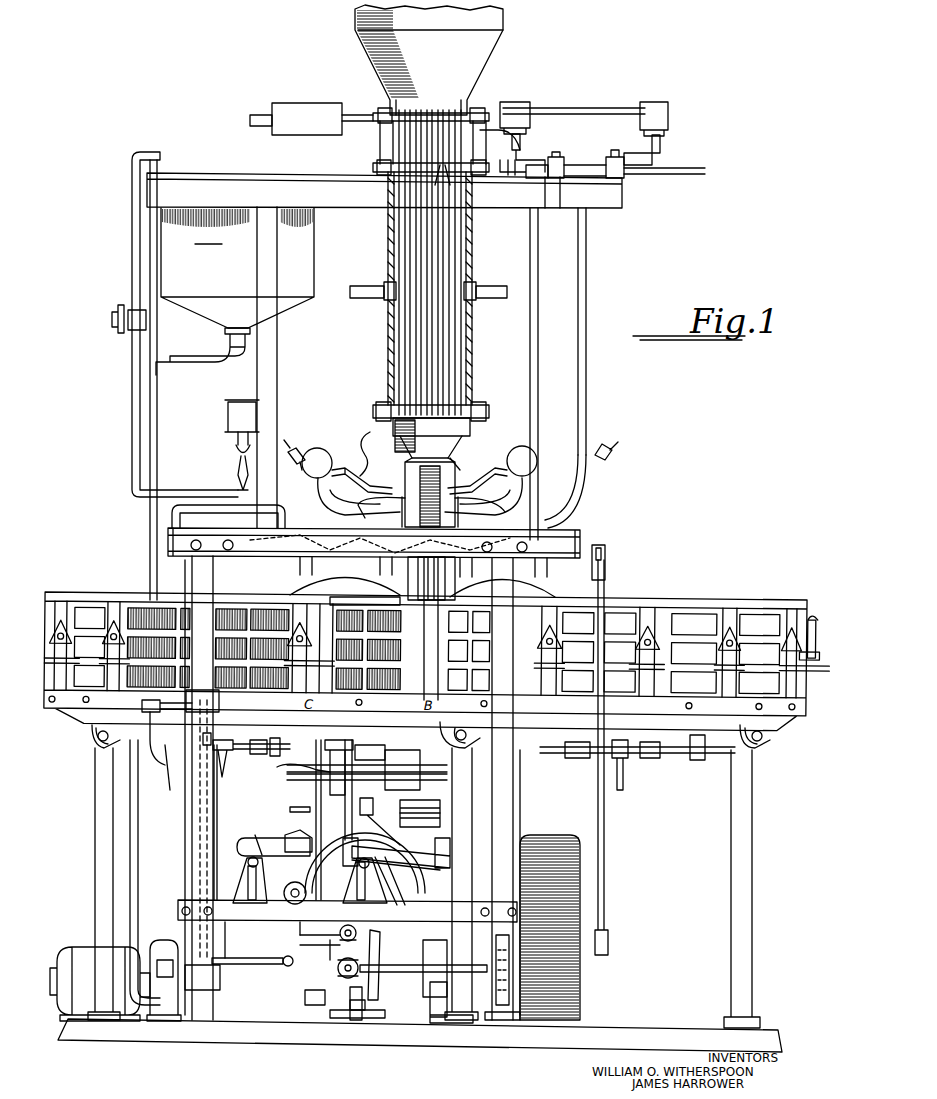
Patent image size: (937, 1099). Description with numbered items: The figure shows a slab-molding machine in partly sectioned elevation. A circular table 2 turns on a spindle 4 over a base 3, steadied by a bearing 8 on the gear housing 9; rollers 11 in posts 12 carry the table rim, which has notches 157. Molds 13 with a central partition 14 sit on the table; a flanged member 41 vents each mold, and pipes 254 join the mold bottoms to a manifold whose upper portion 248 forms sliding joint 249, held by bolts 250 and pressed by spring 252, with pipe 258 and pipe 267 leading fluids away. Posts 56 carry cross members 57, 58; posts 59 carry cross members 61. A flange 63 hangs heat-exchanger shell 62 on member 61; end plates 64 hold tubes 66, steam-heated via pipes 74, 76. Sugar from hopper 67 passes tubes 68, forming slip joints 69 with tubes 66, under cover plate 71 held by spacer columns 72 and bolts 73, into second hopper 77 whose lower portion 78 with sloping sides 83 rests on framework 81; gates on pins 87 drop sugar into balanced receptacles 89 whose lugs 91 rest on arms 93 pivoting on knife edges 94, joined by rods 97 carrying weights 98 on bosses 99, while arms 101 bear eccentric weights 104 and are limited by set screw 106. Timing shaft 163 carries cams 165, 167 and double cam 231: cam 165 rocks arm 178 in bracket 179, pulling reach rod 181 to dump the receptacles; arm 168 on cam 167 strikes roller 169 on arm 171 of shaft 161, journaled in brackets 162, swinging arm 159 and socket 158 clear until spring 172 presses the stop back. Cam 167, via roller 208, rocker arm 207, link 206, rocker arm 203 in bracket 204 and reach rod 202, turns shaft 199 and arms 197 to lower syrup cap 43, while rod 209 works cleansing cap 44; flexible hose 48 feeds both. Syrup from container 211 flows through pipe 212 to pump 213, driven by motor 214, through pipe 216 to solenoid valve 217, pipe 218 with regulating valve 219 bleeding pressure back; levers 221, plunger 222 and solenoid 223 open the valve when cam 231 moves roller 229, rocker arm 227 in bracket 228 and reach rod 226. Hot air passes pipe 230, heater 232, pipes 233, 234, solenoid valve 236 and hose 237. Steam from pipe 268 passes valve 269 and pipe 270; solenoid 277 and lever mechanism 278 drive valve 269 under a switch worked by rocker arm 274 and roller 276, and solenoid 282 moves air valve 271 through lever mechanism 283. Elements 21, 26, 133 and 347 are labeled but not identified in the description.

The circular table 2 is at (795, 725).
The base 3 is at (250, 1040).
The spindle 4 is at (395, 750).
The bearing 8 is at (400, 812).
The gear housing 9 is at (255, 835).
The rollers 11 is at (92, 732).
The posts 12 is at (95, 808).
The molds 13 is at (96, 595).
The central partition 14 is at (295, 680).
The hanger bracket 21 is at (638, 610).
The latch 26 is at (818, 638).
The flanged member 41 is at (238, 748).
The syrup cap 43 is at (297, 582).
The cleansing cap 44 is at (545, 580).
The flexible feeding hose 48 is at (580, 487).
The posts 56 is at (218, 803).
The cross member 57 is at (245, 921).
The cross member 58 is at (578, 528).
The posts 59 is at (277, 357).
The cross member 61 is at (623, 191).
The exterior shell 62 is at (473, 240).
The flange 63 is at (388, 176).
The end plates 64 is at (480, 176).
The tubes 66 is at (410, 240).
The supply hopper 67 is at (498, 32).
The second set of tubes 68 is at (402, 146).
The slip joints 69 is at (452, 182).
The cover plate 71 is at (375, 113).
The spacer columns 72 is at (380, 130).
The through bolts 73 is at (385, 108).
The steam pipe 74 is at (352, 300).
The steam pipe 76 is at (486, 300).
The second hopper 77 is at (472, 432).
The lower portion of lower hopper 78 is at (405, 450).
The framework 81 is at (458, 515).
The inwardly sloping sides 83 is at (452, 440).
The pins 87 is at (405, 466).
The balanced receptacles 89 is at (405, 515).
The lugs 91 is at (445, 475).
The pairs of arms 93 is at (372, 460).
The knife edges 94 is at (348, 496).
The rods 97 is at (485, 480).
The balancing weights 98 is at (318, 450).
The bosses 99 is at (520, 500).
The arms 101 is at (535, 472).
The eccentrically mounted weights 104 is at (290, 466).
The set screw 106 is at (370, 436).
The discharge pipe 133 is at (430, 560).
The notches 157 is at (363, 699).
The socket 158 is at (150, 712).
The arm 159 is at (165, 745).
The shaft 161 is at (218, 783).
The brackets 162 is at (214, 700).
The timing gear shaft 163 is at (300, 925).
The cam 165 is at (365, 903).
The cam 167 is at (316, 800).
The projecting arm 168 is at (293, 962).
The roller 169 is at (293, 968).
The arm 171 is at (226, 940).
The spring 172 is at (180, 745).
The rocker arm 178 is at (440, 870).
The bracket 179 is at (393, 905).
The reach rod 181 is at (442, 789).
The arms 197 is at (303, 545).
The shaft 199 is at (340, 596).
The reach rod 202 is at (277, 767).
The rocker arm 203 is at (340, 1000).
The bracket 204 is at (365, 1018).
The link 206 is at (375, 1000).
The rocker arm 207 is at (595, 942).
The roller 208 is at (352, 948).
The rod 209 is at (601, 810).
The container 211 is at (235, 291).
The pipe 212 is at (150, 513).
The pressure pump 213 is at (155, 942).
The motor 214 is at (80, 947).
The second pipe 216 is at (150, 851).
The solenoid controlled valve 217 is at (290, 536).
The third pipe 218 is at (132, 433).
The pressure regulating valve 219 is at (122, 330).
The system of levers 221 is at (238, 470).
The plunger 222 is at (236, 447).
The solenoid 223 is at (230, 420).
The reach rod 226 is at (347, 755).
The rocker arm 227 is at (278, 858).
The bracket 228 is at (238, 870).
The roller 229 is at (290, 885).
The air pipe 230 is at (253, 115).
The double cam 231 is at (292, 835).
The heater 232 is at (318, 103).
The pipe 233 is at (522, 140).
The pipe 234 is at (530, 265).
The solenoid valve 236 is at (410, 570).
The flexible hose 237 is at (385, 545).
The upper manifold portion 248 is at (447, 768).
The sliding joint 249 is at (447, 778).
The bolts 250 is at (390, 837).
The spring 252 is at (395, 800).
The pipes 254 is at (280, 750).
The pipe 258 is at (400, 852).
The pipe 267 is at (296, 806).
The steam pipe 268 is at (706, 171).
The steam valve 269 is at (612, 150).
The pipe 270 is at (587, 370).
The air valve 271 is at (558, 156).
The rocker arm 274 is at (400, 975).
The roller 276 is at (352, 1020).
The solenoid 277 is at (668, 115).
The lever mechanism 278 is at (660, 148).
The solenoid 282 is at (520, 103).
The lever mechanism 283 is at (542, 150).
The pin 347 is at (315, 772).